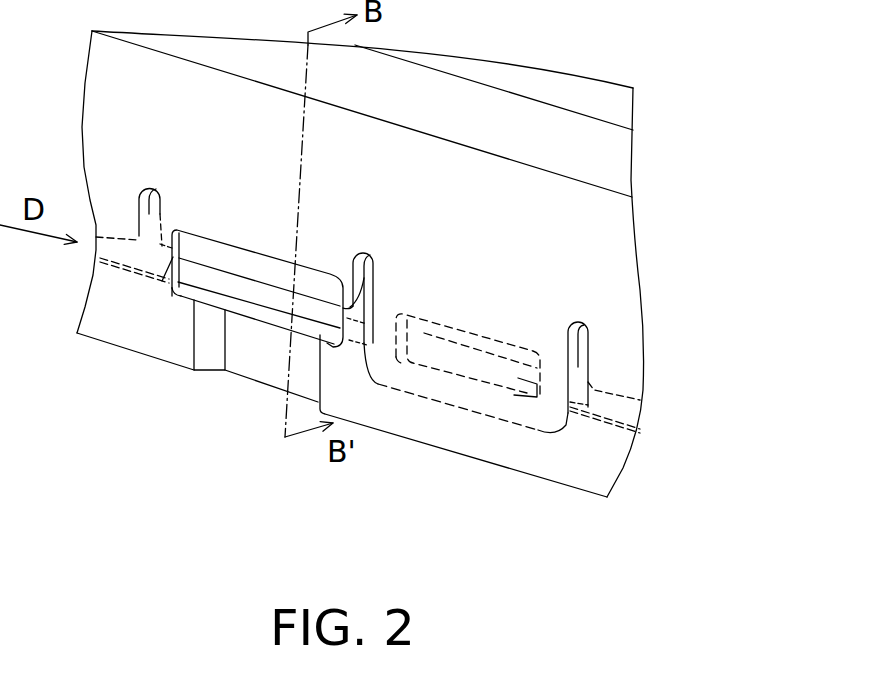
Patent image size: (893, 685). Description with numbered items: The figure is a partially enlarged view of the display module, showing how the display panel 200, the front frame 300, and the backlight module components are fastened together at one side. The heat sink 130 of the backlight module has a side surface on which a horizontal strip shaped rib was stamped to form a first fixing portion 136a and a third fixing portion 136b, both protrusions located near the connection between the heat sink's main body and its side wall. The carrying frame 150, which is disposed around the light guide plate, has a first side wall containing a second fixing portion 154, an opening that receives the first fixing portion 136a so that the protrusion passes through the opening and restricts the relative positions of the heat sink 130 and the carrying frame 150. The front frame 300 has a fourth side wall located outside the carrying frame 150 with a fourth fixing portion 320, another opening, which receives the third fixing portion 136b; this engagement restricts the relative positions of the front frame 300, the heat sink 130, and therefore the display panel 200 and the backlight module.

The display panel 200 is at (607, 96).
The front frame 300 is at (617, 171).
The carrying frame 150 is at (281, 282).
The heat sink 130 is at (333, 408).
The first fixing portion 136a is at (460, 375).
The third fixing portion 136b is at (240, 303).
The second fixing portion 154 is at (528, 397).
The fourth fixing portion 320 is at (173, 296).